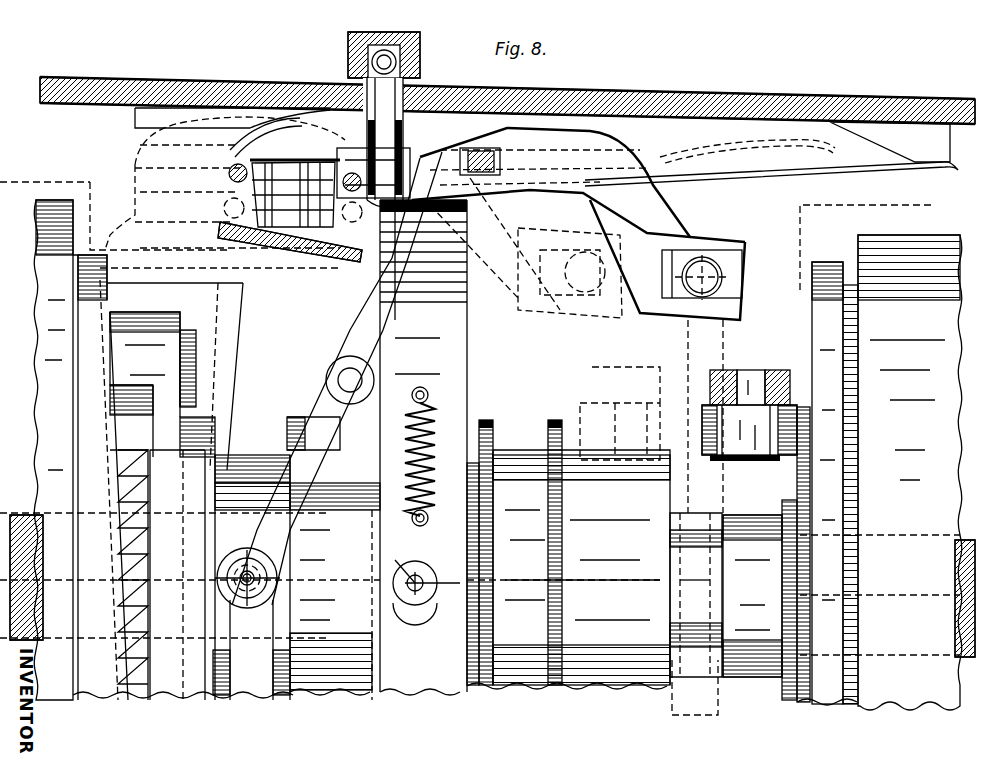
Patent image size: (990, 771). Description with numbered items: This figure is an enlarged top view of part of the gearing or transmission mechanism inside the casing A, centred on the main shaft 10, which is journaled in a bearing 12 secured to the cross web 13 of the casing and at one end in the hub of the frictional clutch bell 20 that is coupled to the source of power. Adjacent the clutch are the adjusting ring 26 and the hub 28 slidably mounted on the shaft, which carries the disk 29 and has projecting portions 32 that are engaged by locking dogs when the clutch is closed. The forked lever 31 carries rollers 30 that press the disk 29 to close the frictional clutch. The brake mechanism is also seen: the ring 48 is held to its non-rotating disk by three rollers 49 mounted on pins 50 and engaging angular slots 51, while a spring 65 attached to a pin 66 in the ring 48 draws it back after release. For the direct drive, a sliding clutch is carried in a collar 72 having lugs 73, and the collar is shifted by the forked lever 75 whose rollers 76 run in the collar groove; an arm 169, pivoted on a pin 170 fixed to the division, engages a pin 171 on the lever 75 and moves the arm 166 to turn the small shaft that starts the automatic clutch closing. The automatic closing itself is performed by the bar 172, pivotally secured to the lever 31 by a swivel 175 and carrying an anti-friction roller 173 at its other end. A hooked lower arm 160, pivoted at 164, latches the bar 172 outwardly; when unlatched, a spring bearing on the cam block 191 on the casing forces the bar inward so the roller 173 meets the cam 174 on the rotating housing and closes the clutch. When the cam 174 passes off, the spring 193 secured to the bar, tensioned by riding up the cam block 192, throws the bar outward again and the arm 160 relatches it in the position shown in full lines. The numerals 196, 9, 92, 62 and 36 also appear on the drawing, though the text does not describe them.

The casing A is at (760, 97).
The pivot of arm 164 is at (420, 68).
The lower arm 160 is at (340, 118).
The cam block 191 is at (232, 119).
The housing body 196 is at (172, 192).
The anti-friction roller 173 is at (286, 315).
The bar 172 is at (578, 223).
The arm 166 is at (480, 140).
The swivel 175 is at (742, 277).
The arm 169 is at (337, 378).
The pin 170 is at (338, 380).
The spring 193 is at (846, 172).
The cam block 192 is at (890, 142).
The frame 9 is at (878, 243).
The gear 92 is at (53, 450).
The cam 174 is at (158, 477).
The lugs 73 is at (153, 506).
The collar 72 is at (166, 558).
The forked lever 75 is at (251, 577).
The rollers 76 is at (268, 515).
The pin 171 is at (246, 596).
The cross web 13 is at (322, 445).
The bearing 12 is at (335, 591).
The ring 48 is at (423, 446).
The pin 66 is at (429, 396).
The spring 65 is at (432, 440).
The spring seat 62 is at (429, 519).
The rollers 49 is at (427, 583).
The angular slots 51 is at (430, 612).
The pins 50 is at (399, 560).
The gear 36 is at (568, 552).
The projecting portions 32 is at (700, 522).
The hub 28 is at (760, 600).
The disk 29 is at (798, 477).
The rollers 30 is at (743, 444).
The forked lever 31 is at (778, 370).
The ring 26 is at (835, 483).
The frictional clutch bell 20 is at (881, 472).
The shaft 10 is at (962, 540).